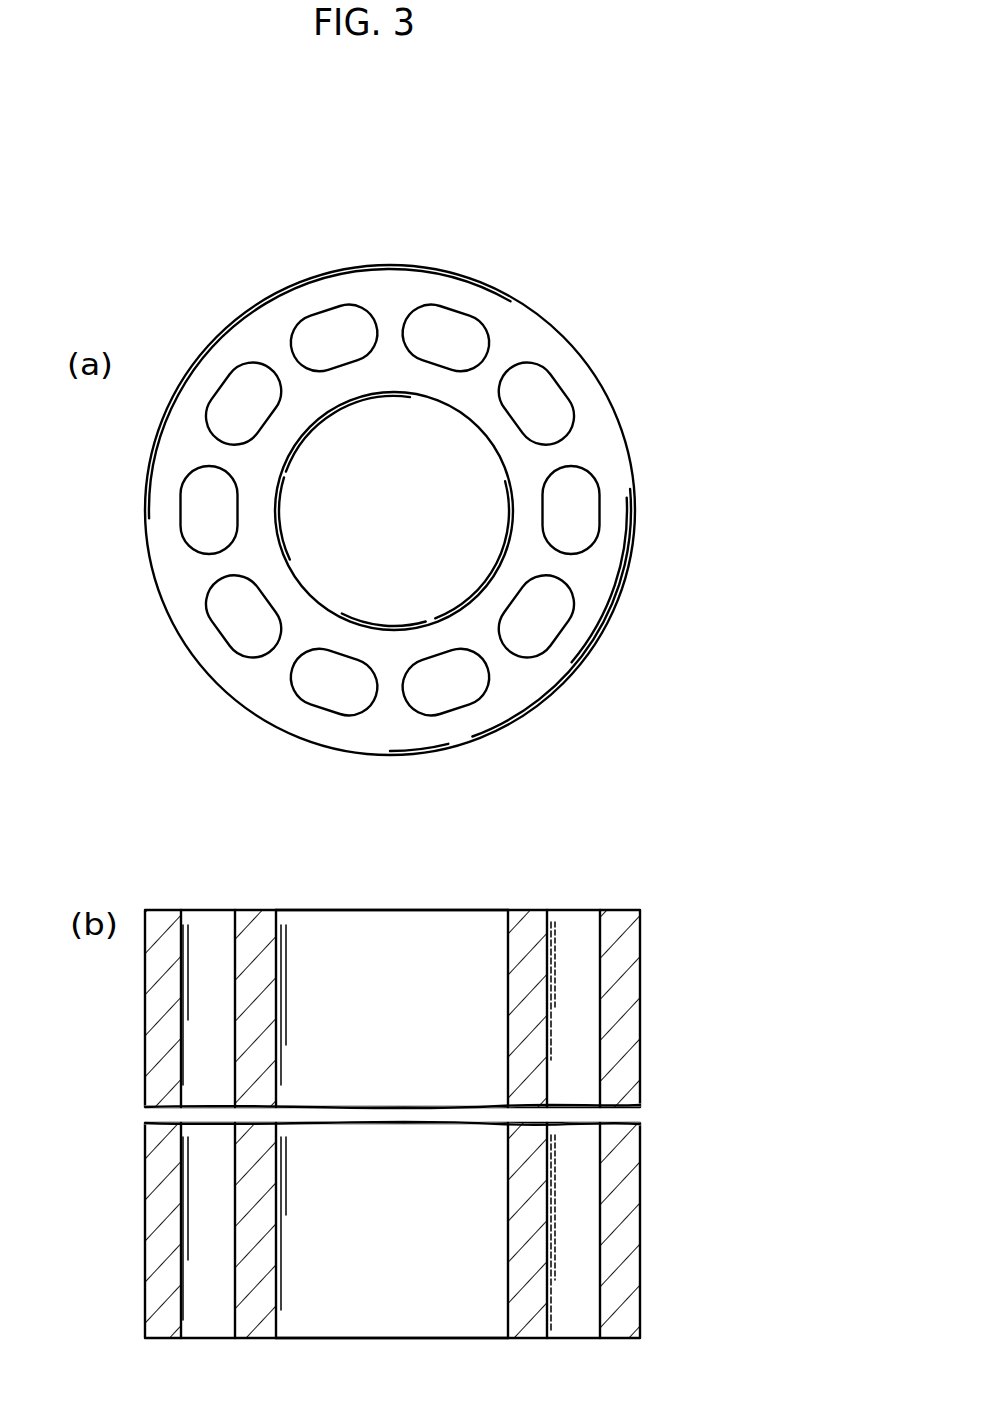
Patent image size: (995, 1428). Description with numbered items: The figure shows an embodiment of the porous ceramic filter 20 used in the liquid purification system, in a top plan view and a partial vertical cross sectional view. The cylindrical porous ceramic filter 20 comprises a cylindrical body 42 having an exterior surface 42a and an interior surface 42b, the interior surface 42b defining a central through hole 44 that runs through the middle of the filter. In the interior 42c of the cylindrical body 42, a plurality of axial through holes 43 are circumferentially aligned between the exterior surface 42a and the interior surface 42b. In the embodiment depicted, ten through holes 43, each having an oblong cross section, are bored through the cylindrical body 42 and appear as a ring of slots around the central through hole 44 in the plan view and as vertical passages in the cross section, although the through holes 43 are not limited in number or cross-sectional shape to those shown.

The porous ceramic filter 20 is at (641, 311).
The cylindrical body 42 is at (437, 284).
The exterior surface 42a is at (511, 297).
The interior surface 42b is at (340, 613).
The interior 42c is at (603, 593).
The axial through holes 43 is at (552, 618).
The central through hole 44 is at (411, 920).